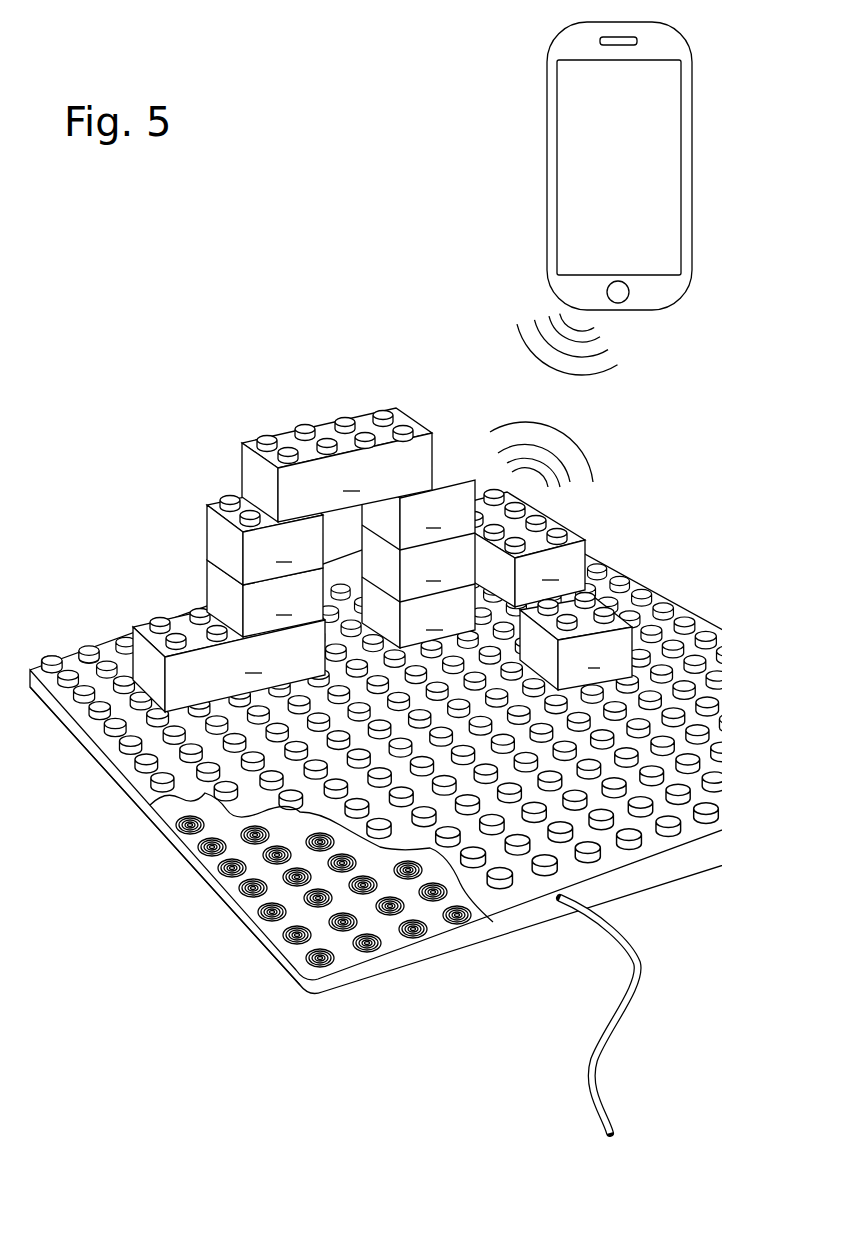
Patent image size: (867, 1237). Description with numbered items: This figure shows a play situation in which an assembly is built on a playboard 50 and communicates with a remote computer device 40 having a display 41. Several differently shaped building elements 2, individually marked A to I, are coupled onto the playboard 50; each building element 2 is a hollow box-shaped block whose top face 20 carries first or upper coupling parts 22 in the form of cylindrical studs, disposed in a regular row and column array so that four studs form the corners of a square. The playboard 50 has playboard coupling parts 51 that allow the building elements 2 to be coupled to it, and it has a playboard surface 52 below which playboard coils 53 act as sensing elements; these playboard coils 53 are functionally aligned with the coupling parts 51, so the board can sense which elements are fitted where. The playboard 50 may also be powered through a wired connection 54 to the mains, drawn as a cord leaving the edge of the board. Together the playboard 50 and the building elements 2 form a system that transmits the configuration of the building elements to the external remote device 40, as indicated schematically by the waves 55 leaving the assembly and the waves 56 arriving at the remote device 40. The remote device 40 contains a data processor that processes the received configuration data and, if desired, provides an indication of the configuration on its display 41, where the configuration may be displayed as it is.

The building element 2 is at (382, 539).
The top face of building element 20 is at (341, 444).
The first or upper coupling parts 22 is at (410, 430).
The remote computer device 40 is at (600, 164).
The display 41 is at (593, 155).
The playboard 50 is at (70, 728).
The playboard coupling parts 51 is at (88, 645).
The playboard surface 52 is at (117, 743).
The playboard coils 53 is at (290, 935).
The power cord/power supply/mains 54 is at (637, 963).
The transmission of data to remote device 55 is at (570, 458).
The receiving data from element of assembly of sensing device 56 is at (581, 366).